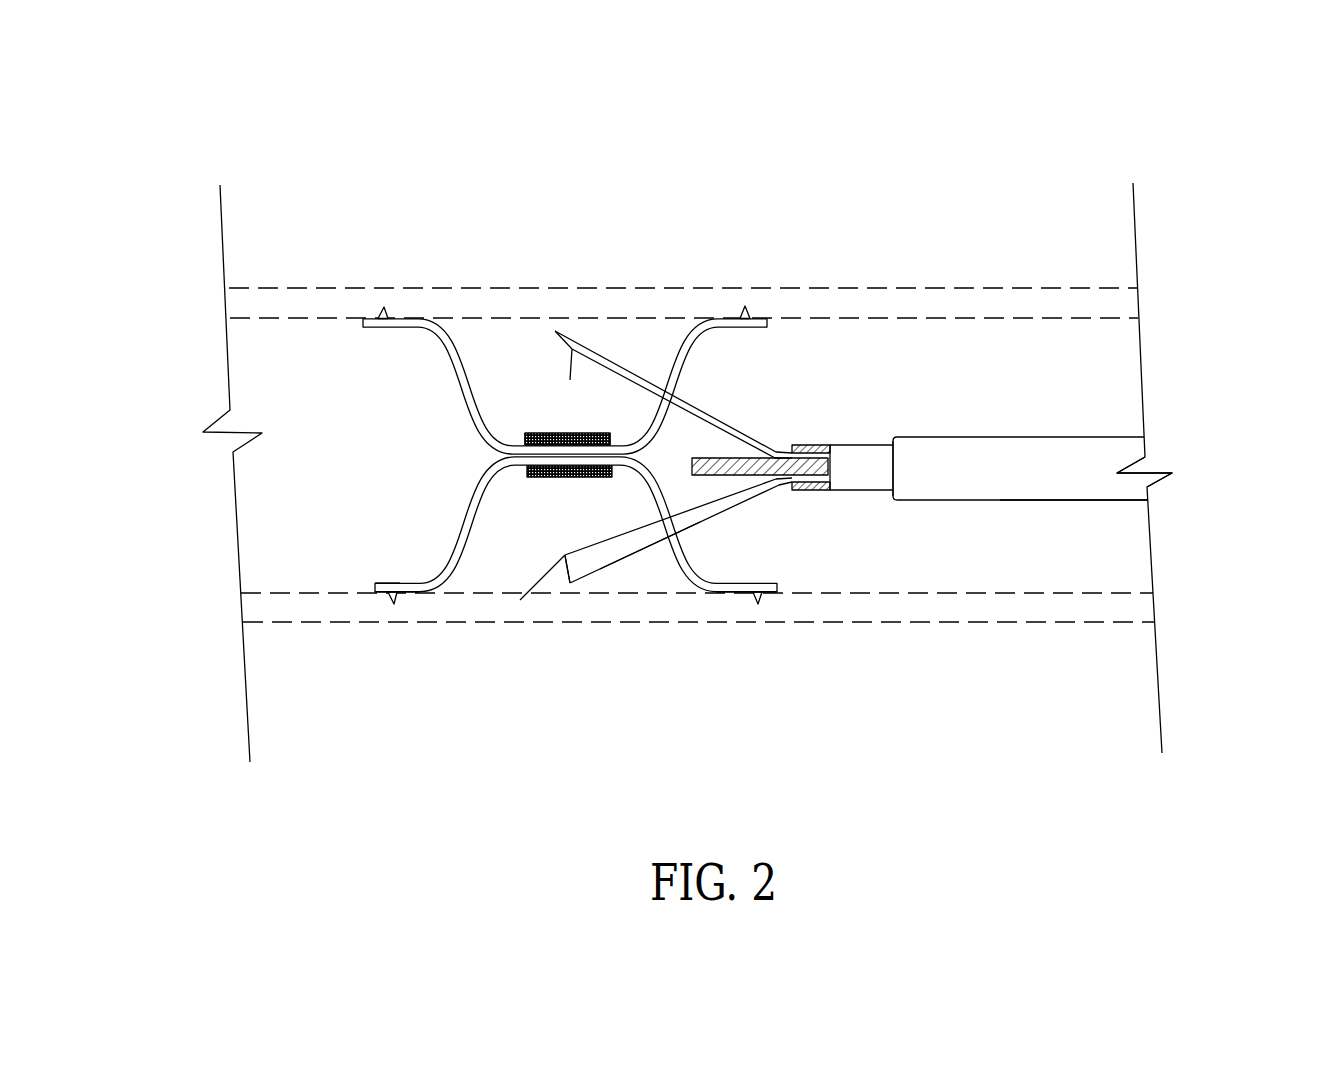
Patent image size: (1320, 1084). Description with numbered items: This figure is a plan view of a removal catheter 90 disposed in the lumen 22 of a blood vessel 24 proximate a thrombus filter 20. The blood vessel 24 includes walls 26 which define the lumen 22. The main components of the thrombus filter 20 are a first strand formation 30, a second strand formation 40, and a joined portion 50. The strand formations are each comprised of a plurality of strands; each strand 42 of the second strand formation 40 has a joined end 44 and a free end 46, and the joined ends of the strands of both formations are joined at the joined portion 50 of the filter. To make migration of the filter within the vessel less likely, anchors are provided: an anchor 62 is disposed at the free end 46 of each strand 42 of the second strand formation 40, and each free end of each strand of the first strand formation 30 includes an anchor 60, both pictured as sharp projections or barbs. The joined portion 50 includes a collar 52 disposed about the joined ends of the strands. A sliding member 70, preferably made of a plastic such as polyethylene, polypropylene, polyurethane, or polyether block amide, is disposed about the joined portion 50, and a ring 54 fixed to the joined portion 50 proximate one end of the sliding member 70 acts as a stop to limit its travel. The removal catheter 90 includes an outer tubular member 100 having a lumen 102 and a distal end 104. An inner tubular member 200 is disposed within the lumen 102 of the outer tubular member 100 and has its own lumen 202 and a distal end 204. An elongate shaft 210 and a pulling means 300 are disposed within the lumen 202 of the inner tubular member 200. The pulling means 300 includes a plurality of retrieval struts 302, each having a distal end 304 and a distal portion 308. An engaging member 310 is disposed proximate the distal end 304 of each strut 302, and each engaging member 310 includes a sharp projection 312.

The thrombus filter 20 is at (613, 150).
The lumen 22 is at (1085, 382).
The blood vessel 24 is at (1051, 278).
The walls 26 is at (1123, 607).
The first strand formation 30 is at (690, 609).
The second strand formation 40 is at (415, 654).
The strand 42 is at (470, 507).
The joined end 44 is at (477, 443).
The free end 46 is at (355, 571).
The joined portion 50 is at (524, 505).
The collar 52 is at (560, 433).
The ring 54 is at (525, 437).
The anchor 60 is at (757, 598).
The anchor 62 is at (394, 598).
The sliding member 70 is at (583, 432).
The removal catheter 90 is at (1046, 522).
The outer tubular member 100 is at (1095, 451).
The lumen 102 is at (1163, 452).
The distal end 104 is at (898, 418).
The inner tubular member 200 is at (850, 465).
The lumen 202 is at (848, 470).
The distal end 204 is at (820, 490).
The elongate shaft 210 is at (748, 458).
The pulling means 300 is at (787, 484).
The retrieval strut 302 is at (812, 512).
The distal end 304 is at (547, 621).
The distal portion 308 is at (643, 569).
The engaging member 310 is at (565, 557).
The sharp projection 312 is at (520, 605).